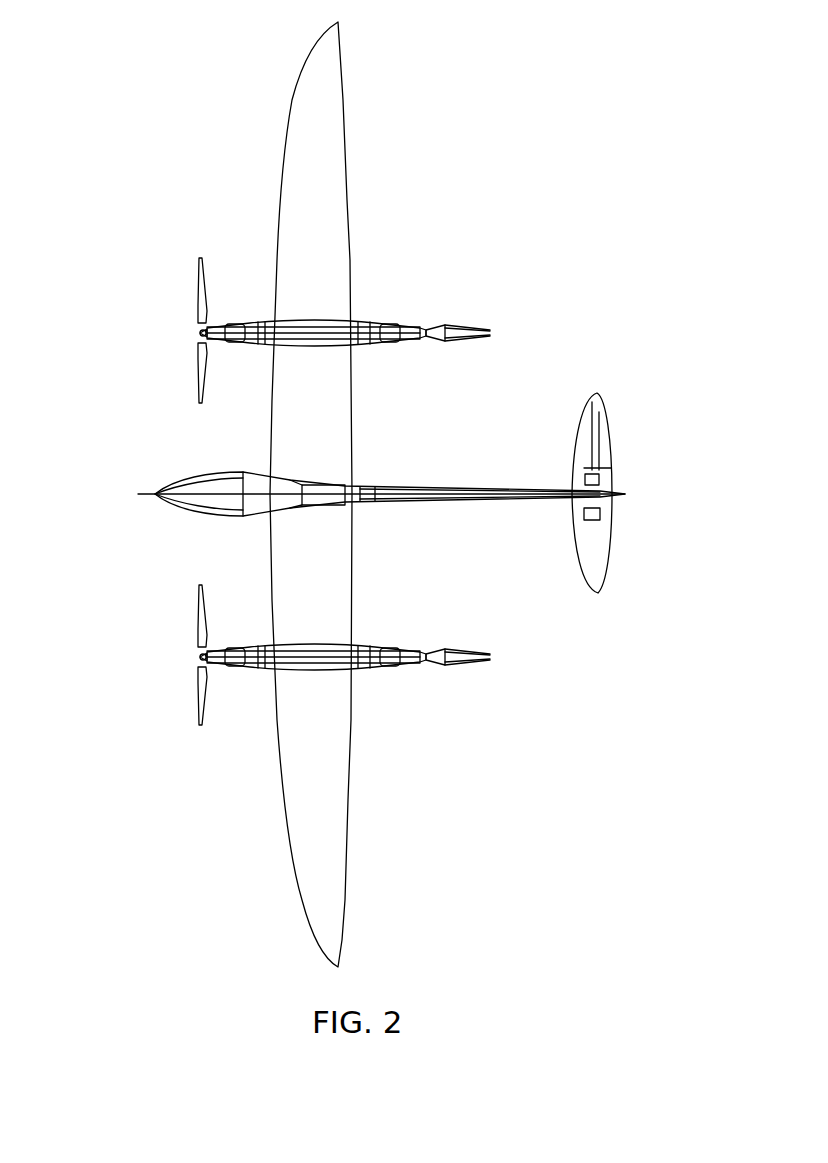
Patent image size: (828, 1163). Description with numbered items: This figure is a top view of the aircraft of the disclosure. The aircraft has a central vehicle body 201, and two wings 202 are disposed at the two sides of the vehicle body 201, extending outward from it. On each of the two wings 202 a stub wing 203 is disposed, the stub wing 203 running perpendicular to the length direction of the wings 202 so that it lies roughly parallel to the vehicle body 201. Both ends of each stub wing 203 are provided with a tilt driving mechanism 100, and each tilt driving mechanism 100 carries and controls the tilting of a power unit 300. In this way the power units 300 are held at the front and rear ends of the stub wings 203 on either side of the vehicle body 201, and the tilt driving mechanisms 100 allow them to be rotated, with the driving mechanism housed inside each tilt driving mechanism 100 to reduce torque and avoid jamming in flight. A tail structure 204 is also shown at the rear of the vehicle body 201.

The tilt driving mechanism 100 is at (228, 323).
The vehicle body 201 is at (398, 493).
The wing 202 is at (317, 255).
The stub wing 203 is at (322, 340).
The tail 204 is at (596, 551).
The power unit 300 is at (198, 350).